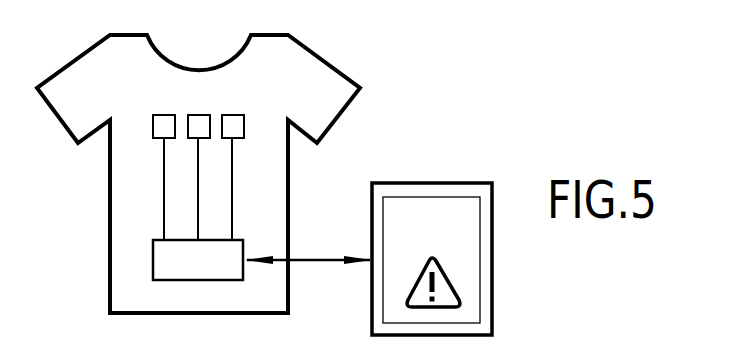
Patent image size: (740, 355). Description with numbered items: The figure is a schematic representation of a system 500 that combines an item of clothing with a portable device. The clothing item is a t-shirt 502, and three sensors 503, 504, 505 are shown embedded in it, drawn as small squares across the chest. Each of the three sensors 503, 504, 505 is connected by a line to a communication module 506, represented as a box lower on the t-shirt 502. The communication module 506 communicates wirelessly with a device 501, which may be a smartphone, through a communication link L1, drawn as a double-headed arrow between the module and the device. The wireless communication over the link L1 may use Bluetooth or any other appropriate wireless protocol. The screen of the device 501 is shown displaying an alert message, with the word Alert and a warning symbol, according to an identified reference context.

The system 500 is at (503, 53).
The device 501 is at (435, 183).
The garment (shirt) 502 is at (317, 55).
The sensor 503 is at (164, 116).
The sensor 504 is at (202, 120).
The sensor 505 is at (233, 118).
The communication module 506 is at (198, 260).
The communication link L1 is at (317, 257).